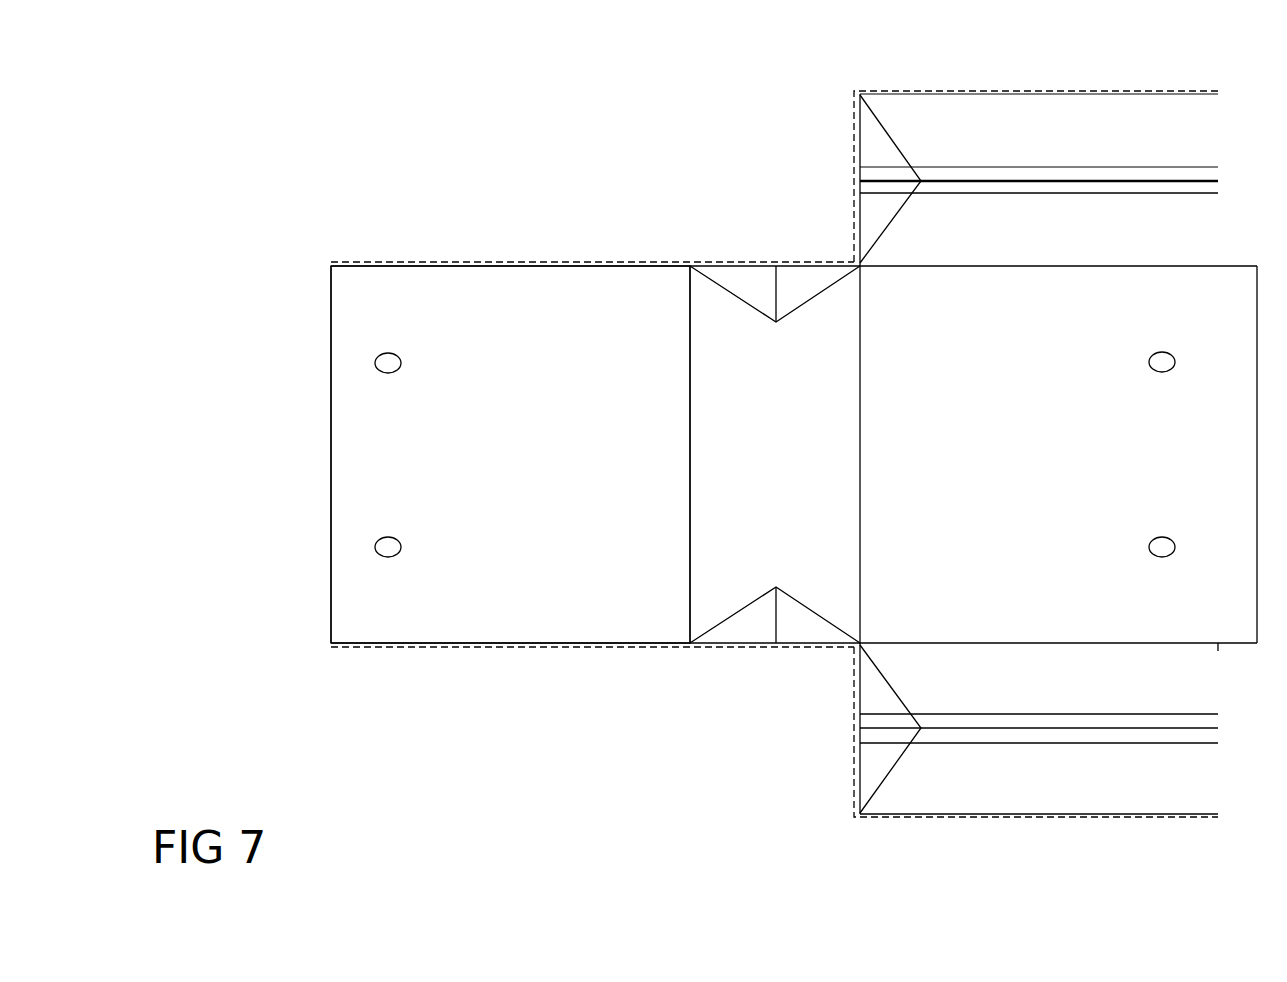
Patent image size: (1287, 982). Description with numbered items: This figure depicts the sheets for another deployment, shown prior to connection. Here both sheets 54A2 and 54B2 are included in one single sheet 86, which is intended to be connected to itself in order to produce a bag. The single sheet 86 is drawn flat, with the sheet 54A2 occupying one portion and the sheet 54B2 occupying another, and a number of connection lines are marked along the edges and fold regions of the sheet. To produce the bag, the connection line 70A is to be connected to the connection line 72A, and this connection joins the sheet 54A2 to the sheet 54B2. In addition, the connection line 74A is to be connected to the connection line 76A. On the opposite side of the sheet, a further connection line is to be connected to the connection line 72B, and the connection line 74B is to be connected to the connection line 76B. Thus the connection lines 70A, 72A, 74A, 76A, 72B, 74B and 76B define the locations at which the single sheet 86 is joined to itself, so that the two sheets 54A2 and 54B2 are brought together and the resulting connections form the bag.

The single sheet 86 is at (242, 151).
The sheet 54A2 is at (753, 454).
The sheet 54B2 is at (1039, 454).
The connection line 70A is at (1036, 452).
The connection line 72A is at (592, 246).
The connection line 72B is at (592, 662).
The connection line 74A is at (858, 179).
The connection line 74B is at (860, 729).
The connection line 76A is at (775, 277).
The connection line 76B is at (775, 633).